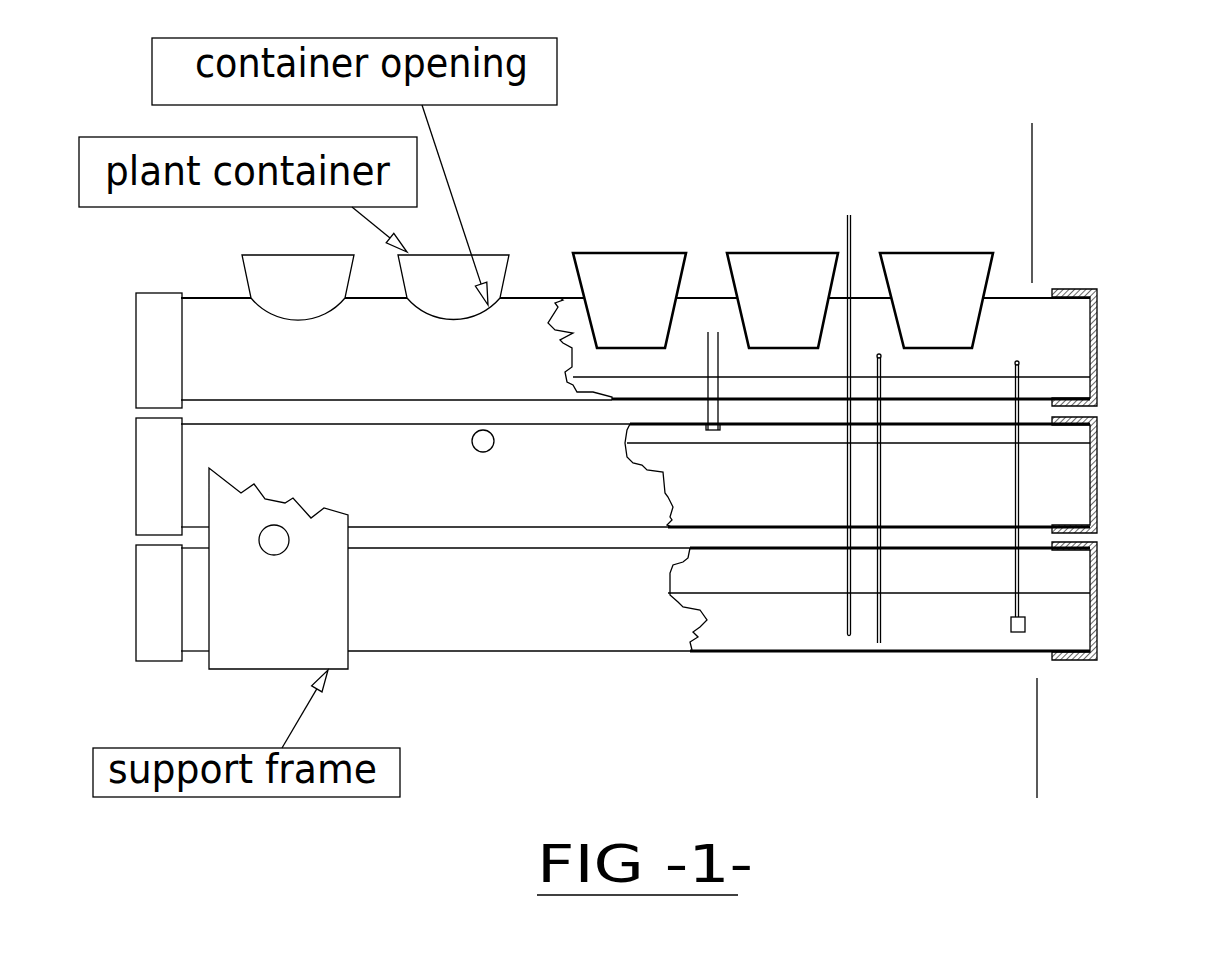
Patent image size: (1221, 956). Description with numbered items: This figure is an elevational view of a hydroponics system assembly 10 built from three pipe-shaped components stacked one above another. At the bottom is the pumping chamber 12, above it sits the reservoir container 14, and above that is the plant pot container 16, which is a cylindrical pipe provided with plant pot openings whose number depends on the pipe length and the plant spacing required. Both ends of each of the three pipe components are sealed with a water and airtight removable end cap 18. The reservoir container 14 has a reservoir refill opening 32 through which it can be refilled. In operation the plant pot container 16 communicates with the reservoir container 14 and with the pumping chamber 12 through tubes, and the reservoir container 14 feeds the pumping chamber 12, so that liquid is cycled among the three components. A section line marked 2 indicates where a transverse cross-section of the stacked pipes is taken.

The section line 2- 2 is at (1060, 197).
The hydroponics system assembly 10 is at (617, 364).
The pumping chamber 12 is at (379, 653).
The reservoir container 14 is at (447, 528).
The plant pot container 16 is at (528, 399).
The removable end cap 18 is at (138, 335).
The reservoir refill opening 32 is at (485, 430).